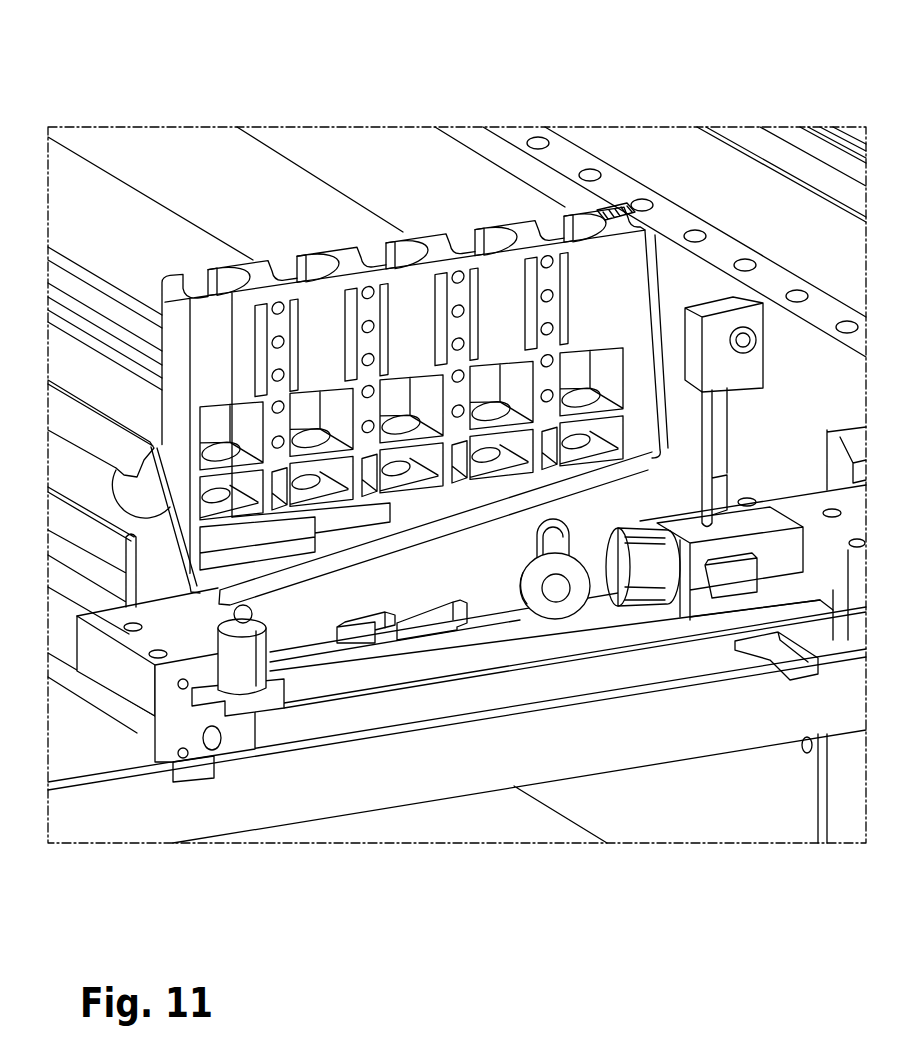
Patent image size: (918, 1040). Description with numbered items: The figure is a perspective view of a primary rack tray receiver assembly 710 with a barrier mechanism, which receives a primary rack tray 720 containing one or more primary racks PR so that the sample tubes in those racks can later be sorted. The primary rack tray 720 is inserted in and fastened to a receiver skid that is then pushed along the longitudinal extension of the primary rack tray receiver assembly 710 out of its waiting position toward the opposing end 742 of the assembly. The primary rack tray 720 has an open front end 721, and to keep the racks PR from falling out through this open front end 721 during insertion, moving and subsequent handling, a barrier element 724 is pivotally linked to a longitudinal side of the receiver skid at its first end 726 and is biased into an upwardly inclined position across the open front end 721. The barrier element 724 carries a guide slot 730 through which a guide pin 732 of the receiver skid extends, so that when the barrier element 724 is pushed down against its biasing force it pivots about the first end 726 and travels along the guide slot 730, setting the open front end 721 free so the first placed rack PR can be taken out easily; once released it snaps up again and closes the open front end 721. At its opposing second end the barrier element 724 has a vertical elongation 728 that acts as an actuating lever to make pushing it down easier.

The primary rack tray receiver assembly 710 is at (682, 106).
The primary rack PR is at (498, 208).
The primary rack tray 720 is at (68, 418).
The open front end 721 is at (128, 436).
The barrier element 724 is at (489, 600).
The first end 726 is at (268, 615).
The vertical elongation 728 is at (703, 380).
The guide slot 730 is at (556, 532).
The guide pin 732 is at (553, 584).
The opposing end 742 is at (683, 662).